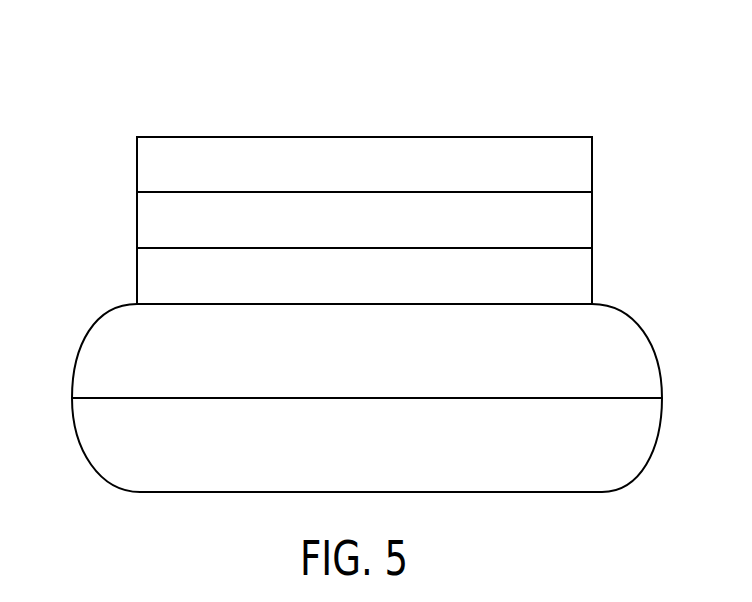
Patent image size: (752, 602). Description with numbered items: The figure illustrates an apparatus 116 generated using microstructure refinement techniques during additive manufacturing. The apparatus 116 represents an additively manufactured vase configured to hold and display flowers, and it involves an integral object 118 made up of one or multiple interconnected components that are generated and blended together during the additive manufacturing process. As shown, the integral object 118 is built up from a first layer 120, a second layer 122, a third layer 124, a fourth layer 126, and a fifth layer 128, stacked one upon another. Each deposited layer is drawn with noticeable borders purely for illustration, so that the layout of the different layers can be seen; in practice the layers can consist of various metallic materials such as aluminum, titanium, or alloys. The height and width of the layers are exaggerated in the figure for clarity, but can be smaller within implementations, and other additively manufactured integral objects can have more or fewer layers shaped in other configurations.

The apparatus 116 is at (98, 98).
The integral object 118 is at (273, 135).
The first layer 120 is at (661, 428).
The second layer 122 is at (648, 336).
The third layer 124 is at (593, 274).
The fourth layer 126 is at (593, 214).
The fifth layer 128 is at (593, 152).